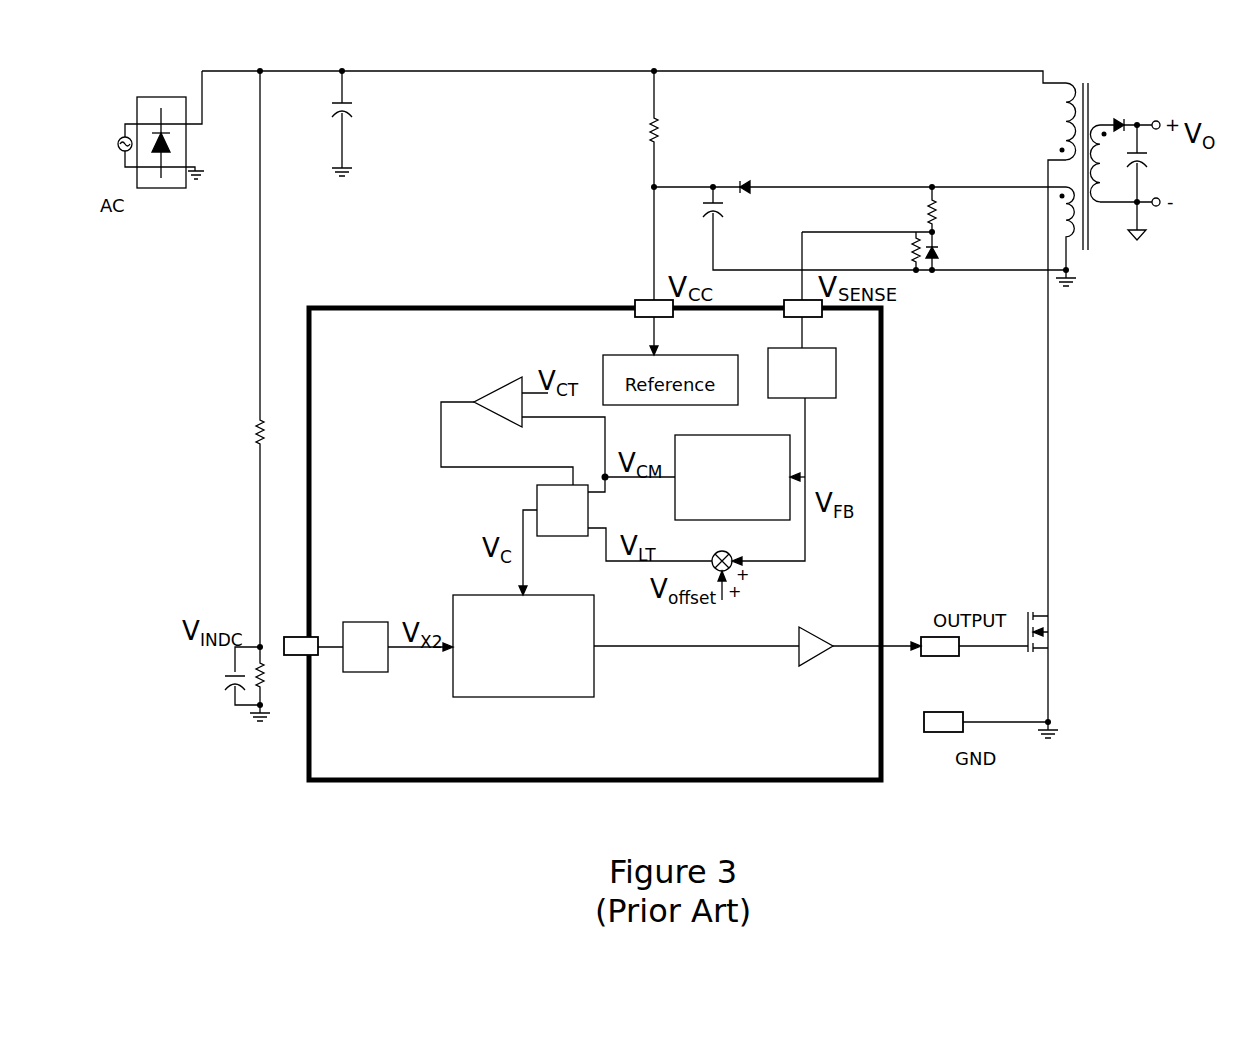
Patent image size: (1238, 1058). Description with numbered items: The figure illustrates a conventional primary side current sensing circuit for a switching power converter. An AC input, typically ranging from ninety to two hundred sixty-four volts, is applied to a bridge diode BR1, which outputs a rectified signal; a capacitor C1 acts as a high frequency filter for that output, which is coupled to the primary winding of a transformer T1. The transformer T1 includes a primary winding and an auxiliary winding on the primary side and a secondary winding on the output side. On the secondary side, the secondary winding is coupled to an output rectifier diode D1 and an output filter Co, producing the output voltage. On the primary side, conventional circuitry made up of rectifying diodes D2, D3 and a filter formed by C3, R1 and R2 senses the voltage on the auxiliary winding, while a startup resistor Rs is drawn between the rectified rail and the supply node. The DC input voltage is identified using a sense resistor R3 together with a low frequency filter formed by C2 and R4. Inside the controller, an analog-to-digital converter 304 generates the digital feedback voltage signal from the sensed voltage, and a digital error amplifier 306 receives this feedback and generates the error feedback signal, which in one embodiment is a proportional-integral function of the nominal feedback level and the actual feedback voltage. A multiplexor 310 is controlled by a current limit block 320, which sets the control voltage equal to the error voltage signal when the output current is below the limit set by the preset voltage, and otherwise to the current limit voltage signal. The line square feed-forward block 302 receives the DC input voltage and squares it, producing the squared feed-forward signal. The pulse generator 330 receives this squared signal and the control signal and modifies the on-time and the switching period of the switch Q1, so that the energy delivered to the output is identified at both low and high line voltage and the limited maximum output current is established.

The line square feed-forward block 302 is at (364, 635).
The analog-to-digital converter 304 is at (808, 371).
The digital error amplifier 306 is at (732, 467).
The multiplexor 310 is at (541, 510).
The current limit block 320 is at (523, 430).
The pulse generator 330 is at (523, 646).
The bridge diode BR1 is at (161, 128).
The capacitor C1 is at (367, 123).
The low frequency filter capacitor C2 is at (227, 684).
The filter capacitor C3 is at (869, 228).
The output filter Co is at (1160, 163).
The output rectifier diode D1 is at (1126, 113).
The rectifying diode D2 is at (860, 176).
The rectifying diode D3 is at (949, 251).
The filter resistor R1 is at (950, 209).
The filter resistor R2 is at (867, 251).
The sense resistor R3 is at (239, 359).
The low frequency filter resistor R4 is at (275, 676).
The startup resistor Rs is at (633, 185).
The transformer T1 is at (1077, 387).
The switch Q1 is at (1035, 675).